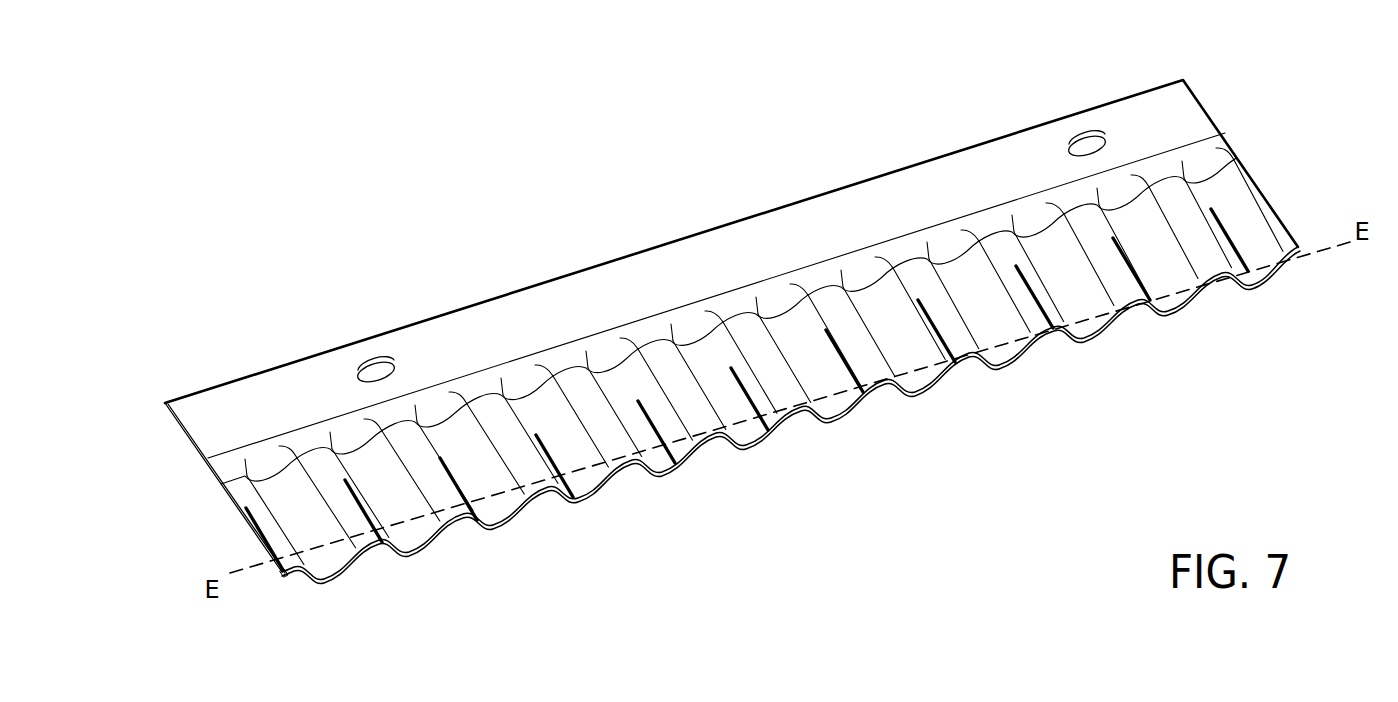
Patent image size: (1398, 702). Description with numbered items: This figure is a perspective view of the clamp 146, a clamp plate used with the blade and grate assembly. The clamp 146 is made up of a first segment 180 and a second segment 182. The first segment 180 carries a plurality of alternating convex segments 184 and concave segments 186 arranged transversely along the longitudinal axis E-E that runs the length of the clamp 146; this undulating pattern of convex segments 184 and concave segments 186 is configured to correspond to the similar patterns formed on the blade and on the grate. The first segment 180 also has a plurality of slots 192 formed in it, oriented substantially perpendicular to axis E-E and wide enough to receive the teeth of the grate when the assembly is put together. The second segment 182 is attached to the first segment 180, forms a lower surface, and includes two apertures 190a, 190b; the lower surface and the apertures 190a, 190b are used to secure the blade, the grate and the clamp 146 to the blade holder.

The clamp 146 is at (1207, 104).
The first segment 180 is at (250, 577).
The second segment 182 is at (165, 403).
The convex segments 184 is at (806, 405).
The concave segments 186 is at (761, 447).
The aperture 190a is at (378, 362).
The aperture 190b is at (1085, 137).
The slots 192 is at (918, 388).